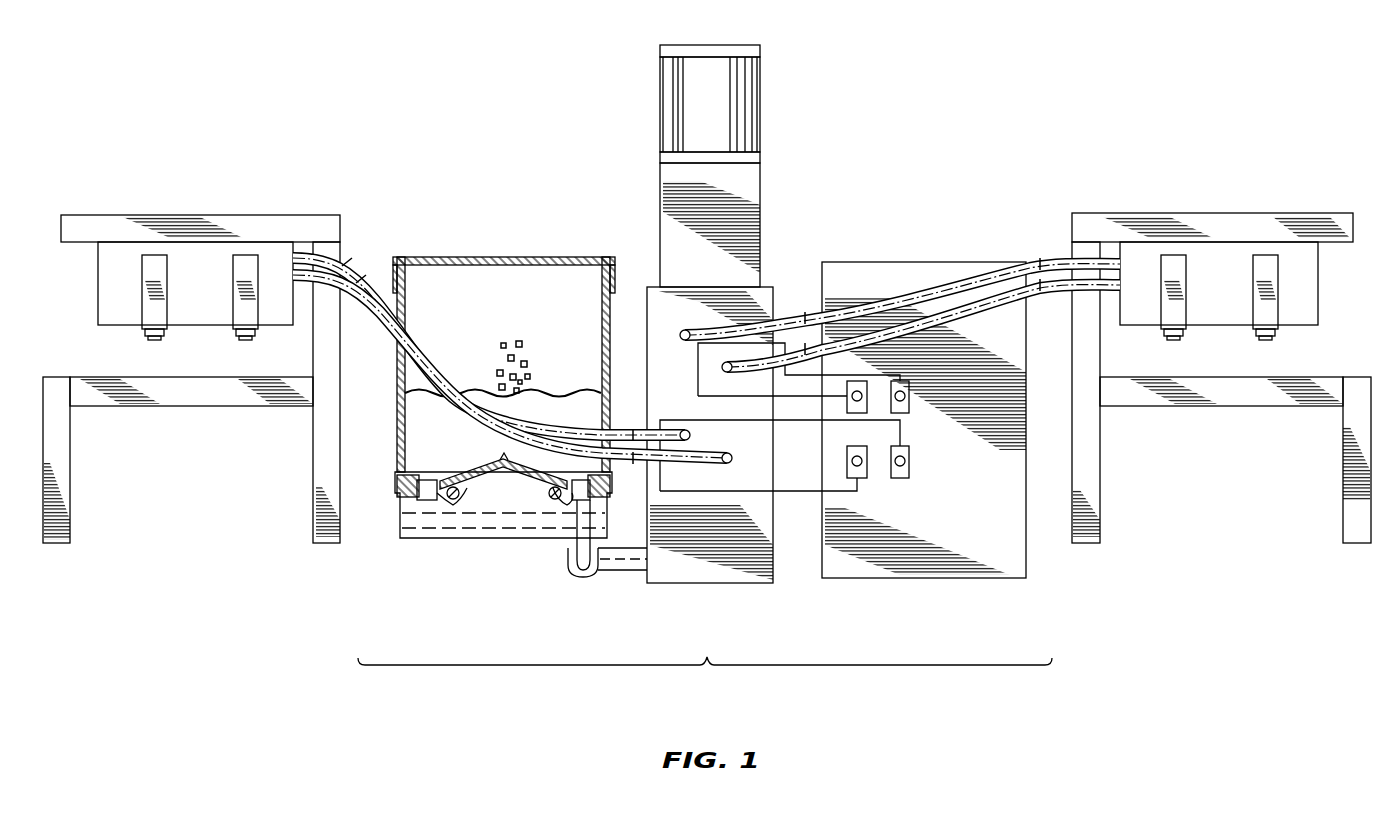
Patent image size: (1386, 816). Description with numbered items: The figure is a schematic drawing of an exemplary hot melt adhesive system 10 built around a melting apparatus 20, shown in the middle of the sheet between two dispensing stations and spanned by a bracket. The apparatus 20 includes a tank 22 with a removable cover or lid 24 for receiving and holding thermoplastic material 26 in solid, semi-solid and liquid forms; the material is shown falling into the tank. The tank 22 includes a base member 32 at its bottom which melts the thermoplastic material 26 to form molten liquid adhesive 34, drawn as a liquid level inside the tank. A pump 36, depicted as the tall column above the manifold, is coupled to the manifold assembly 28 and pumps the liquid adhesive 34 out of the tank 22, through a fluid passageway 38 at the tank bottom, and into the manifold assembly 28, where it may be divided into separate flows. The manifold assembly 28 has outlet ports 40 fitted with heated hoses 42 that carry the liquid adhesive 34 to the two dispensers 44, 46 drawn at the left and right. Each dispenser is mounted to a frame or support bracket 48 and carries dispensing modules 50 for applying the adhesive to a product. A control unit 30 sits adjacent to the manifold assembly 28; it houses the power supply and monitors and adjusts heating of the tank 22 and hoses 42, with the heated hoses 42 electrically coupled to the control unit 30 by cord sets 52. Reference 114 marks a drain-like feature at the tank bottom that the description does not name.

The hot melt adhesive system 10 is at (1234, 84).
The melting apparatus 20 is at (707, 657).
The tank 22 is at (516, 404).
The removable cover or lid 24 is at (491, 257).
The thermoplastic material 26 is at (500, 360).
The manifold assembly 28 is at (715, 583).
The control unit 30 is at (843, 437).
The base member 32 is at (484, 490).
The liquid adhesive 34 is at (437, 436).
The pump 36 is at (762, 98).
The fluid passageway 38 is at (548, 535).
The outlet ports 40 is at (685, 341).
The heated hoses 42 is at (706, 348).
The dispenser 44 is at (84, 348).
The dispenser 46 is at (1318, 350).
The frame or support bracket 48 is at (92, 215).
The dispensing modules 50 is at (233, 312).
The cord sets 52 is at (901, 437).
The drain 114 is at (583, 576).